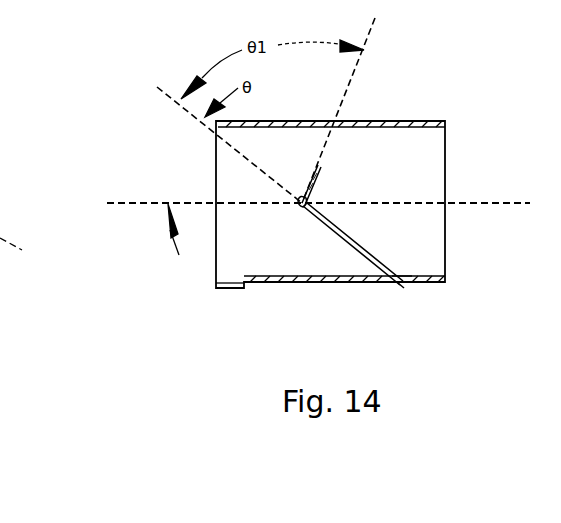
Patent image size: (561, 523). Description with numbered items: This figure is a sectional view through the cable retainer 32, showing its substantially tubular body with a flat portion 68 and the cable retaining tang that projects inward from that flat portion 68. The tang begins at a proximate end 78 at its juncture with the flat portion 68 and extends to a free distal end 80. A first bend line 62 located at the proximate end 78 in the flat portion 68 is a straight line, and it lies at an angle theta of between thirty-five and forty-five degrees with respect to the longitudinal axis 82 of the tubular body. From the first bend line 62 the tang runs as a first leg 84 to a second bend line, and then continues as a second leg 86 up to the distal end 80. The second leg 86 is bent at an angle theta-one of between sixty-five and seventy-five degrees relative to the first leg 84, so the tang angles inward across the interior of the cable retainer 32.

The cable retainer 32 is at (108, 136).
The longitudinal axis 82 is at (494, 202).
The distal end 80 is at (318, 170).
The second leg 86 is at (316, 196).
The first leg 84 is at (358, 245).
The first bend line 62 is at (406, 277).
The flat portion 68 is at (430, 284).
The proximate end 78 is at (398, 288).